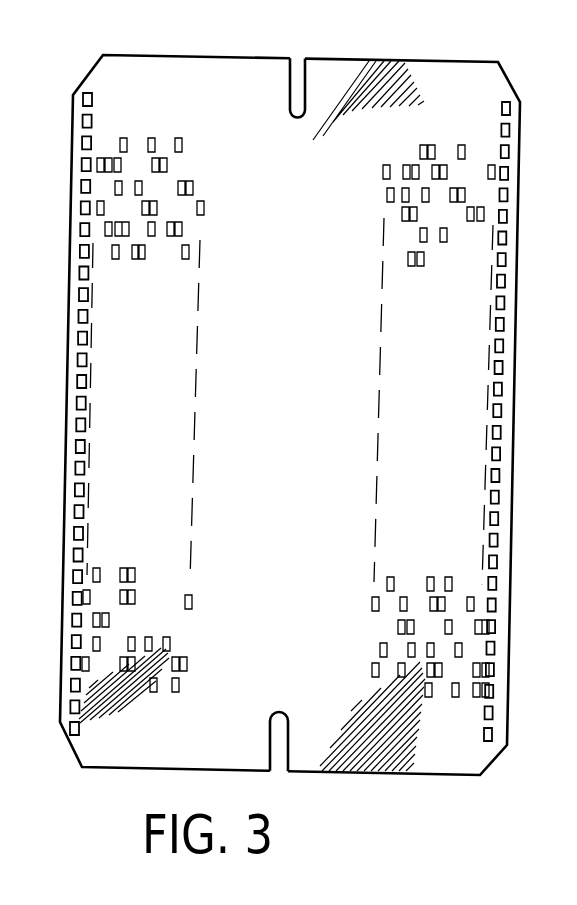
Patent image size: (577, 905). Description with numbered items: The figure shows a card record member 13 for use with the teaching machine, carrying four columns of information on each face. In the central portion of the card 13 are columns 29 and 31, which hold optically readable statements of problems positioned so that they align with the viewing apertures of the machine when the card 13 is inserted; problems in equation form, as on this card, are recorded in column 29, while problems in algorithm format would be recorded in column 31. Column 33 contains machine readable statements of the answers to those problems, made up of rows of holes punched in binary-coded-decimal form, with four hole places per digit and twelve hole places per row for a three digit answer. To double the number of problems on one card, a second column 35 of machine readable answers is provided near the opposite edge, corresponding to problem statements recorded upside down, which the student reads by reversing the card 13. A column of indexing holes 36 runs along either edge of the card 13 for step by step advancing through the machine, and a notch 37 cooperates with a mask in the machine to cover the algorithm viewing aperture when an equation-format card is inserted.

The card record member 13 is at (372, 72).
The column 29 is at (246, 70).
The column 31 is at (331, 75).
The column 33 is at (149, 68).
The second column 35 is at (450, 80).
The indexing holes 36 is at (83, 143).
The notch 37 is at (296, 74).